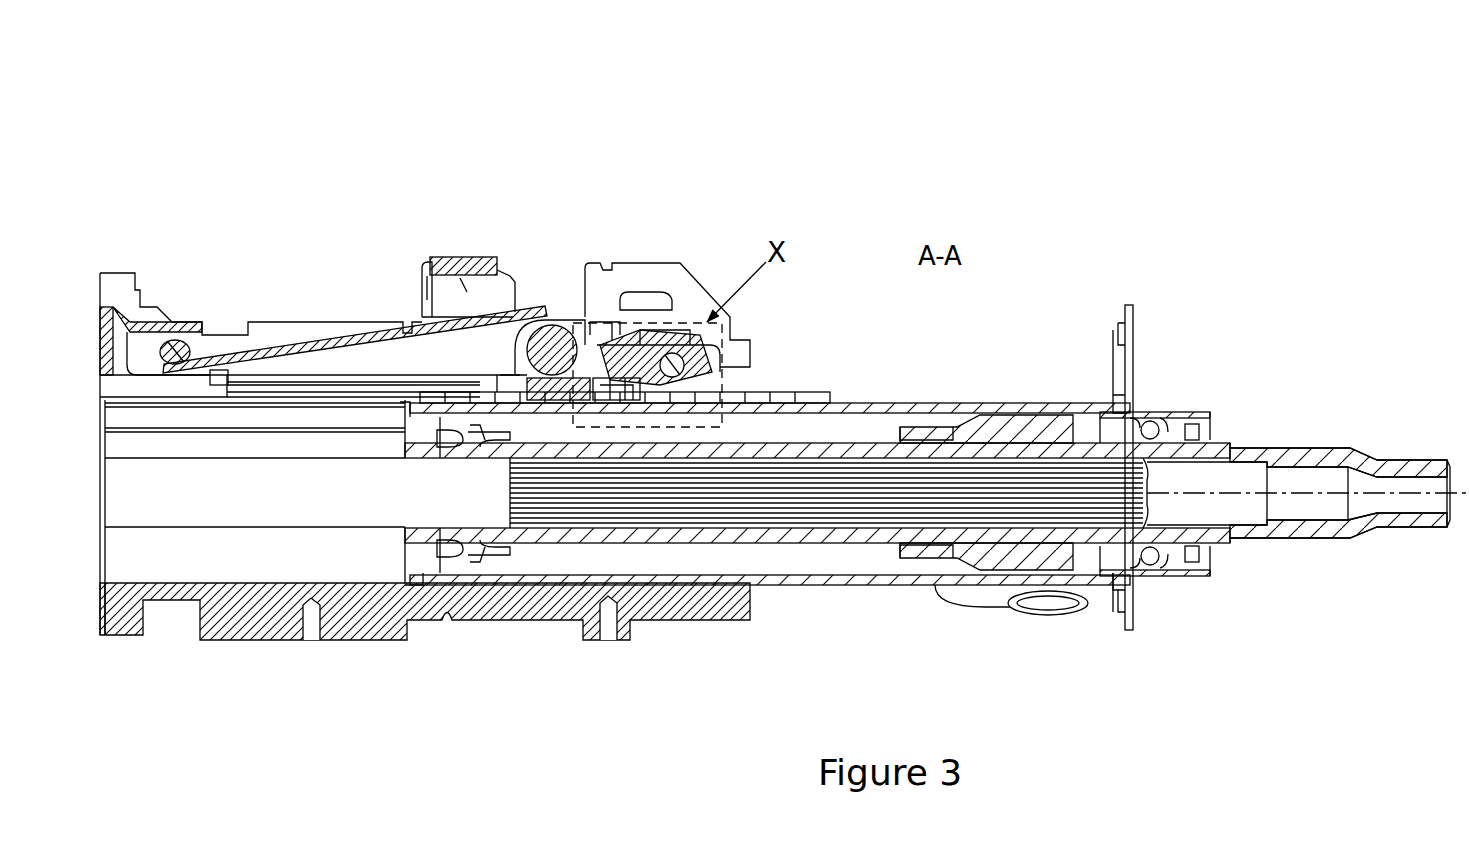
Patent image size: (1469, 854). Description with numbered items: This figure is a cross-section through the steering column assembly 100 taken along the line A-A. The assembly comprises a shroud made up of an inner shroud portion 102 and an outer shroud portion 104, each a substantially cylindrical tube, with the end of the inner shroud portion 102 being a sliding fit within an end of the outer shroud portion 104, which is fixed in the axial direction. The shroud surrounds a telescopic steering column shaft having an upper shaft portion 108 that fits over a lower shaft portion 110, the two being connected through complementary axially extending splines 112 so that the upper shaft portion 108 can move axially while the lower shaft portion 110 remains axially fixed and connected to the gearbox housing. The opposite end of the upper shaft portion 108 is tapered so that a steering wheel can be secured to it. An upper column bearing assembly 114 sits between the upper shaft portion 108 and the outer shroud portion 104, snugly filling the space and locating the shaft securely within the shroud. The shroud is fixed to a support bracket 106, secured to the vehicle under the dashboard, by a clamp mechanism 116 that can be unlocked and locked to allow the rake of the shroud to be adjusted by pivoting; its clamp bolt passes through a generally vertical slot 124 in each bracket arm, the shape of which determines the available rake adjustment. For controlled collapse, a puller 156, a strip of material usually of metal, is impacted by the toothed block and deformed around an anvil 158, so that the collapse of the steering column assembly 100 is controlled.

The steering column assembly 100 is at (1012, 188).
The inner shroud portion 102 is at (1082, 392).
The outer shroud portion 104 is at (345, 640).
The support bracket 106 is at (437, 245).
The upper shaft portion 108 is at (1277, 437).
The lower shaft portion 110 is at (233, 530).
The splines 112 is at (526, 505).
The upper column bearing assembly 114 is at (428, 555).
The clamp mechanism 116 is at (647, 325).
The vertical slot 124 is at (668, 300).
The puller 156 is at (556, 390).
The anvil 158 is at (535, 345).